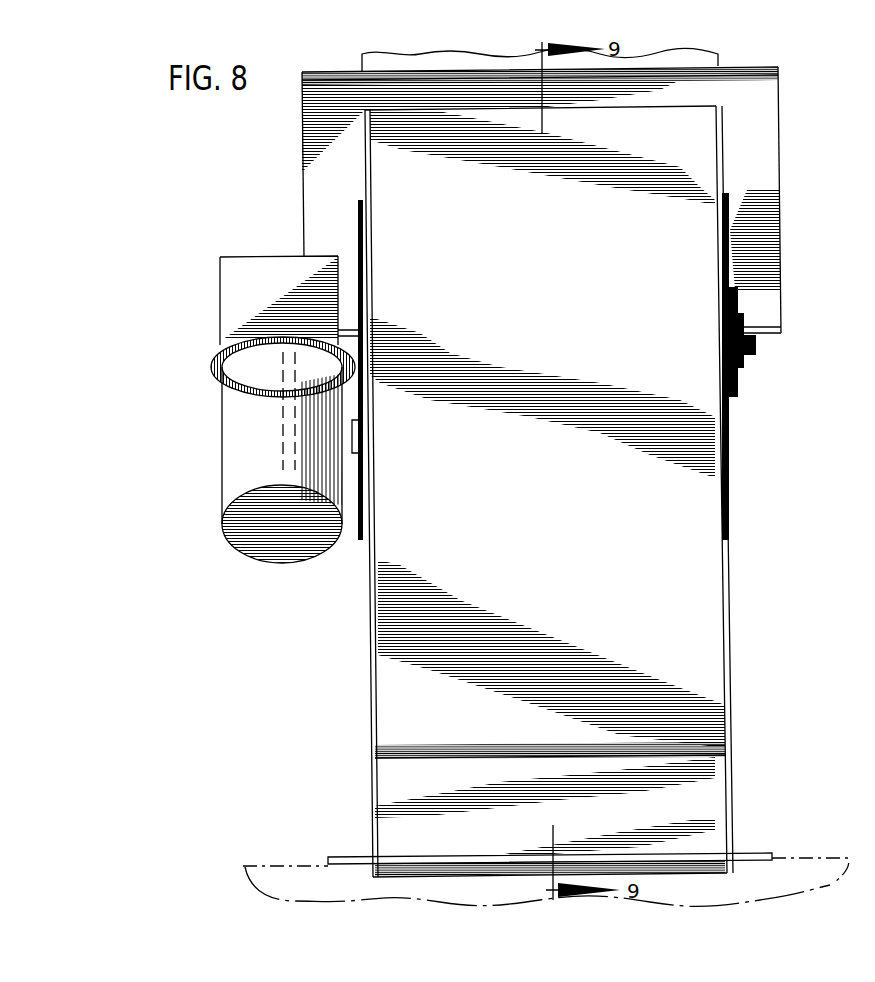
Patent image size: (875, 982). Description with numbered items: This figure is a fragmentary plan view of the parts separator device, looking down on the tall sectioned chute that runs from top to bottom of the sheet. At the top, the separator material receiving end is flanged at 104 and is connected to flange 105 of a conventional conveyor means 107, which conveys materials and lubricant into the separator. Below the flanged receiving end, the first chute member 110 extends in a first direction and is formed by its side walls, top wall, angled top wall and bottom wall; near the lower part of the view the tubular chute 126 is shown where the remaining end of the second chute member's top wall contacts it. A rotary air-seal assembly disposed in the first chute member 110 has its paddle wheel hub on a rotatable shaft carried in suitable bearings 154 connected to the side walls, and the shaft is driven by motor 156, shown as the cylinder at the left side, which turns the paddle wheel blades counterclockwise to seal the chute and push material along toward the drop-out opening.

The flange 104 is at (778, 106).
The flange 105 is at (780, 62).
The conveyor means 107 is at (723, 53).
The first chute member 110 is at (703, 628).
The tubular chute 126 is at (708, 802).
The bearings 154 is at (743, 373).
The motor 156 is at (232, 440).